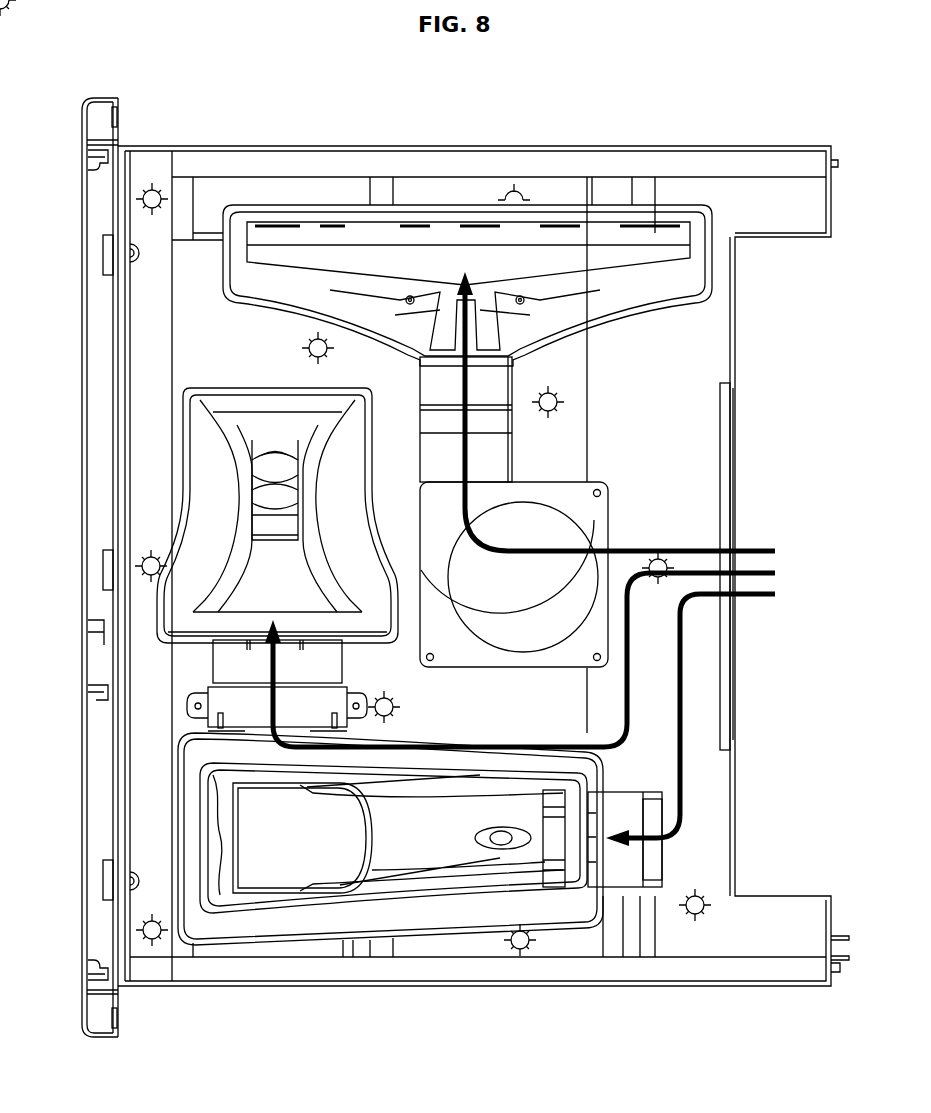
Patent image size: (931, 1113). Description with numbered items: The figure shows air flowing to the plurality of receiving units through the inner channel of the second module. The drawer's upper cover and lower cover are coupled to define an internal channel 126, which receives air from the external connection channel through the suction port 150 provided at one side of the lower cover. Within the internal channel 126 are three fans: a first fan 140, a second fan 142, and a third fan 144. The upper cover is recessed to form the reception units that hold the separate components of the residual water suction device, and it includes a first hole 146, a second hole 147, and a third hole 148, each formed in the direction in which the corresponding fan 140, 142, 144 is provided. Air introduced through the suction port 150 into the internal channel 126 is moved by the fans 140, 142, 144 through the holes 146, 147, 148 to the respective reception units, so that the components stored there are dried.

The internal channel 126 is at (645, 415).
The first fan 140 is at (548, 542).
The second fan 142 is at (240, 705).
The third fan 144 is at (625, 863).
The first hole 146 is at (478, 357).
The second hole 147 is at (222, 640).
The third hole 148 is at (578, 858).
The suction port 150 is at (727, 510).